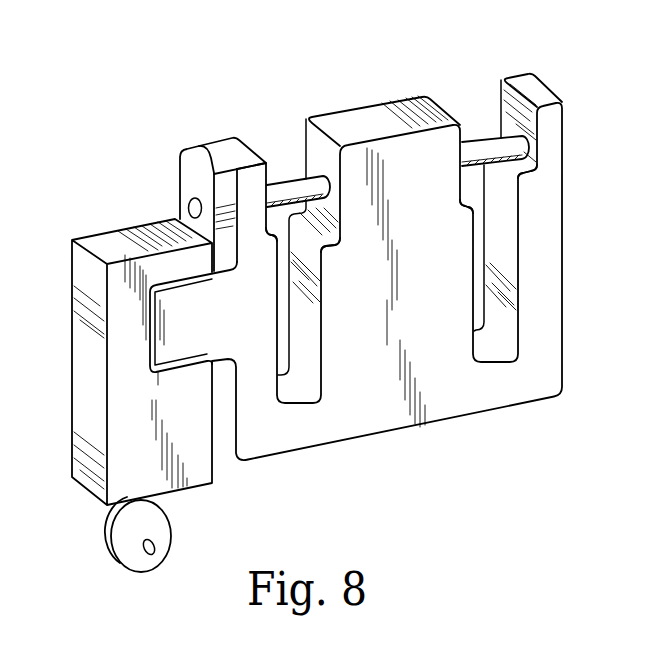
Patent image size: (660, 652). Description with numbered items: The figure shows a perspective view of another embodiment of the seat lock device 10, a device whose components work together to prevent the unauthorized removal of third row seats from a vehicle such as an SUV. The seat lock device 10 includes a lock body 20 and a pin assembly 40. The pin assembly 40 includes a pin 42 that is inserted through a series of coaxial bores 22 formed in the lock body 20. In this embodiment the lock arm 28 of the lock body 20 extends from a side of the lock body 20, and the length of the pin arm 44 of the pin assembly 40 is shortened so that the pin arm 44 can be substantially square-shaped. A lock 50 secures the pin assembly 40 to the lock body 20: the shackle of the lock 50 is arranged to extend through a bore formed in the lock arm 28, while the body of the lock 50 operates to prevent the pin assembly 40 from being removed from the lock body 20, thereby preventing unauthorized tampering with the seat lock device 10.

The seat lock device 10 is at (446, 460).
The lock body 20 is at (541, 369).
The coaxial bores 22 is at (312, 181).
The lock arm 28 is at (185, 305).
The pin assembly 40 is at (192, 142).
The pin 42 is at (276, 185).
The pin arm 44 is at (192, 175).
The lock 50 is at (120, 396).